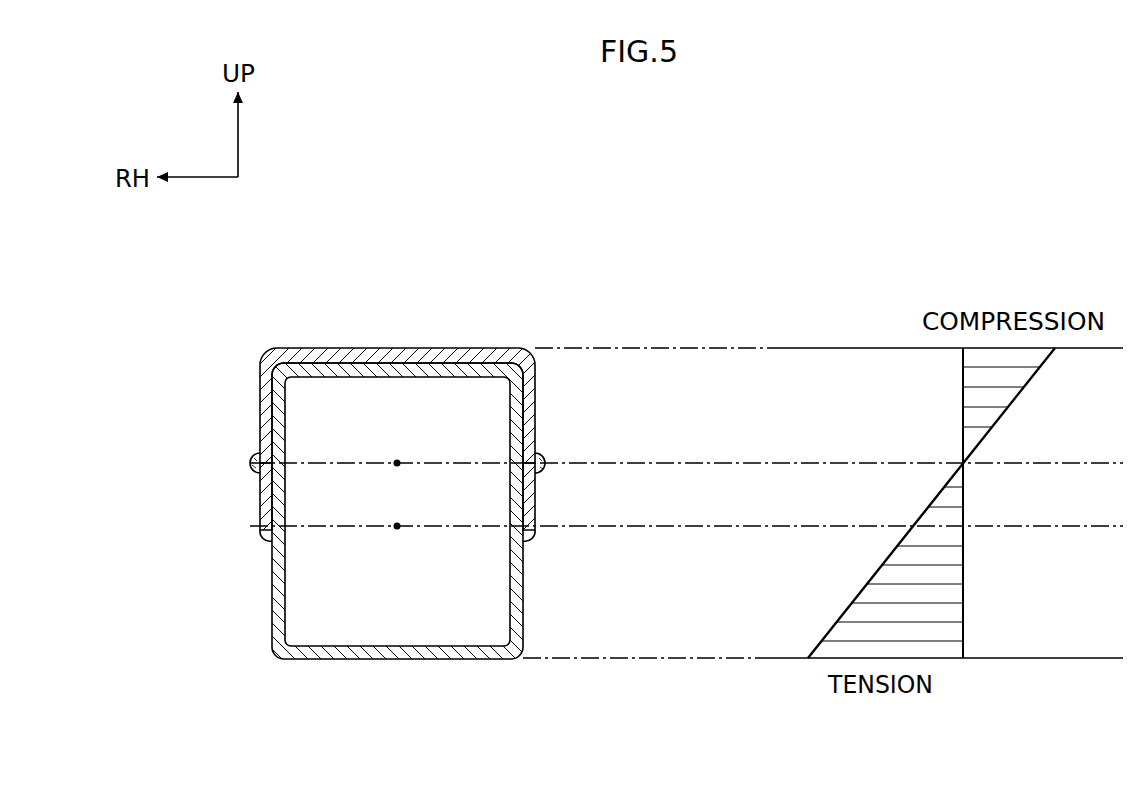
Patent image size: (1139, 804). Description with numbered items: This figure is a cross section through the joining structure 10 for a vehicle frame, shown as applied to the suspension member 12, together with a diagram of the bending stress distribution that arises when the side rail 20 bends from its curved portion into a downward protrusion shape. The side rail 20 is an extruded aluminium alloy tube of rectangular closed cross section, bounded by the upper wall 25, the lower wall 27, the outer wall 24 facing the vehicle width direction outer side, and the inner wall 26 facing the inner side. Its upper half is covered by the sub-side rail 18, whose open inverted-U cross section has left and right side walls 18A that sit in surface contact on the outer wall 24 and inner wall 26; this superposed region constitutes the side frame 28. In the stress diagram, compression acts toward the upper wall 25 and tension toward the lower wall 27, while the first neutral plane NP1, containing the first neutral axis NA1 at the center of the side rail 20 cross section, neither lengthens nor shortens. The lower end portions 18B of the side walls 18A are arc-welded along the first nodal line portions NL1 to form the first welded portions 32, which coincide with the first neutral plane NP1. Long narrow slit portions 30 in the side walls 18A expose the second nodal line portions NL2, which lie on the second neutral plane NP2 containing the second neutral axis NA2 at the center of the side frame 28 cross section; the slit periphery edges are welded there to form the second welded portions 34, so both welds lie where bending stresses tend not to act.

The joining structure 10 is at (236, 475).
The suspension member 12 is at (323, 312).
The sub-side rail 18 is at (370, 346).
The side wall 18A is at (260, 393).
The lower end portion 18B is at (257, 543).
The side rail 20 is at (307, 662).
The outer wall 24 is at (510, 590).
The upper wall 25 is at (312, 377).
The inner wall 26 is at (290, 597).
The lower wall 27 is at (368, 662).
The side frame 28 is at (265, 352).
The slit portion 30 is at (251, 456).
The first welded portion 32 is at (262, 534).
The second welded portion 34 is at (248, 462).
The first neutral axis NA1 is at (397, 530).
The second neutral axis NA2 is at (397, 460).
The first nodal line portion NL1 is at (262, 542).
The second nodal line portion NL2 is at (252, 470).
The first neutral plane NP1 is at (440, 528).
The second neutral plane NP2 is at (460, 462).